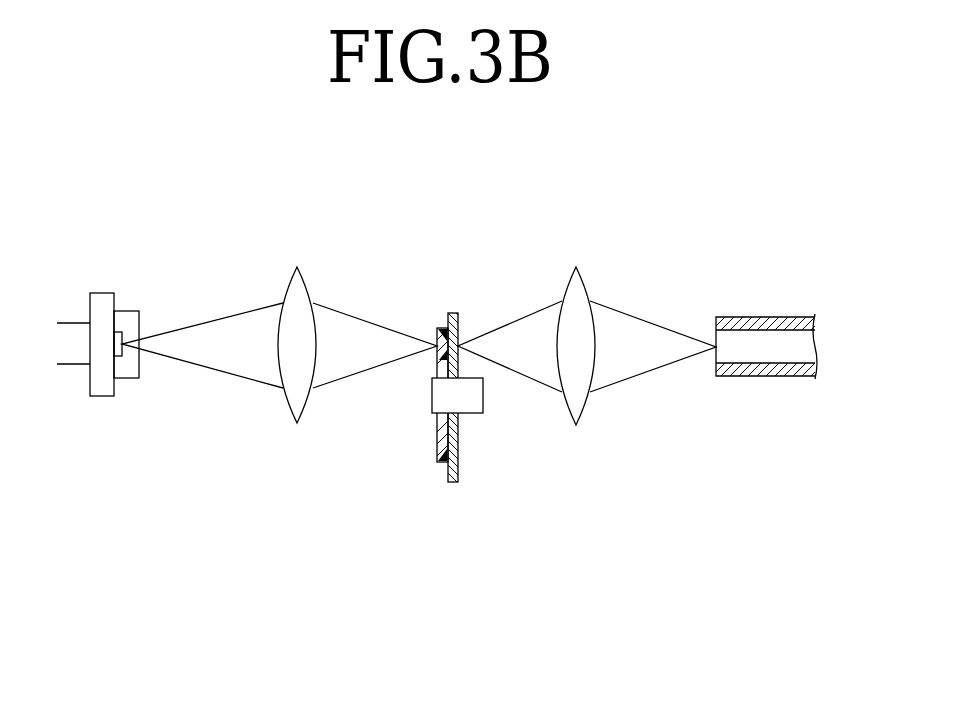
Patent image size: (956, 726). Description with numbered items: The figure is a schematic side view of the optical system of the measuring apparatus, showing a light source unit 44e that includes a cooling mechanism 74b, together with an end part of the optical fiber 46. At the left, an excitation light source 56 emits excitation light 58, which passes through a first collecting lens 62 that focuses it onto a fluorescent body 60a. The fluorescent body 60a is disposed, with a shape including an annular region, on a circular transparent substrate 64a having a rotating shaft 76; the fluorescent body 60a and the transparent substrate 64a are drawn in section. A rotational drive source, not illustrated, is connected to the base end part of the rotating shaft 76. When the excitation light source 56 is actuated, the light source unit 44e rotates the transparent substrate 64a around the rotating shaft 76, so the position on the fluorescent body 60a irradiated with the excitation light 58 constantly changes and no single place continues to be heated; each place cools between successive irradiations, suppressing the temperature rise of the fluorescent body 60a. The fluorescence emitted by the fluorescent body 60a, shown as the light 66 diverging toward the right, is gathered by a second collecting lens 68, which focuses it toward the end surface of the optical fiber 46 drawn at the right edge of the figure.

The light source unit 44e is at (229, 175).
The excitation light source 56 is at (101, 288).
The excitation light 58 is at (220, 325).
The first collecting lens 62 is at (283, 419).
The transparent substrate 64a is at (451, 312).
The fluorescent body 60a is at (428, 453).
The rotating shaft 76 is at (470, 407).
The cooling mechanism 74b is at (429, 421).
The light beam 66 is at (520, 327).
The second collecting lens 68 is at (596, 420).
The optical fiber 46 is at (770, 317).